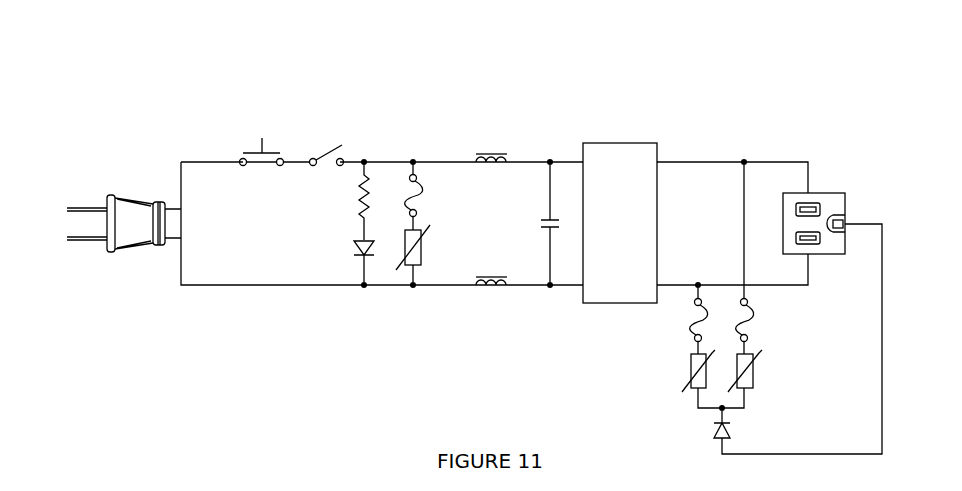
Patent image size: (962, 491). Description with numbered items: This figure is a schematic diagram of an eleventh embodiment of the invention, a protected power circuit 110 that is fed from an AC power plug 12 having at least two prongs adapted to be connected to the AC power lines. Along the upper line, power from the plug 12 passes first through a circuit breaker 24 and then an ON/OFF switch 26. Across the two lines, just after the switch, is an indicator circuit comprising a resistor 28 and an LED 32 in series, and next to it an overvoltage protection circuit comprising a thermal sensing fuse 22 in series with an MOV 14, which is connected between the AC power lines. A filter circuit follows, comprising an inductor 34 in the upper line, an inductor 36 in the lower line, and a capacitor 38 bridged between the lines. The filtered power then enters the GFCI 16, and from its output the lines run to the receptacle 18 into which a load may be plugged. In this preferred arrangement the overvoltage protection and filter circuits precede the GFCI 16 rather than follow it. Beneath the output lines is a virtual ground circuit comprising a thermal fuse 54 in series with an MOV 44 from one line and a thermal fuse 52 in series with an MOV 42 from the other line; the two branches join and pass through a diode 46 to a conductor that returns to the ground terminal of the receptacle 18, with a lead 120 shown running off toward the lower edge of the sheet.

The power cord protection circuit 110 is at (382, 88).
The AC power plug 12 is at (137, 247).
The circuit breaker 24 is at (262, 138).
The ON/OFF switch 26 is at (327, 155).
The resistor 28 is at (350, 195).
The LED 32 is at (347, 250).
The thermal sensing fuse 22 is at (422, 192).
The MOV 14 is at (422, 250).
The inductor 34 is at (493, 152).
The inductor 36 is at (489, 273).
The capacitor 38 is at (538, 217).
The GFCI 16 is at (611, 231).
The receptacle 18 is at (845, 193).
The thermal fuse 54 is at (687, 330).
The thermal fuse 52 is at (752, 317).
The MOV 44 is at (697, 368).
The MOV 42 is at (755, 370).
The diode 46 is at (715, 432).
The circuit ground connection 120 is at (363, 490).